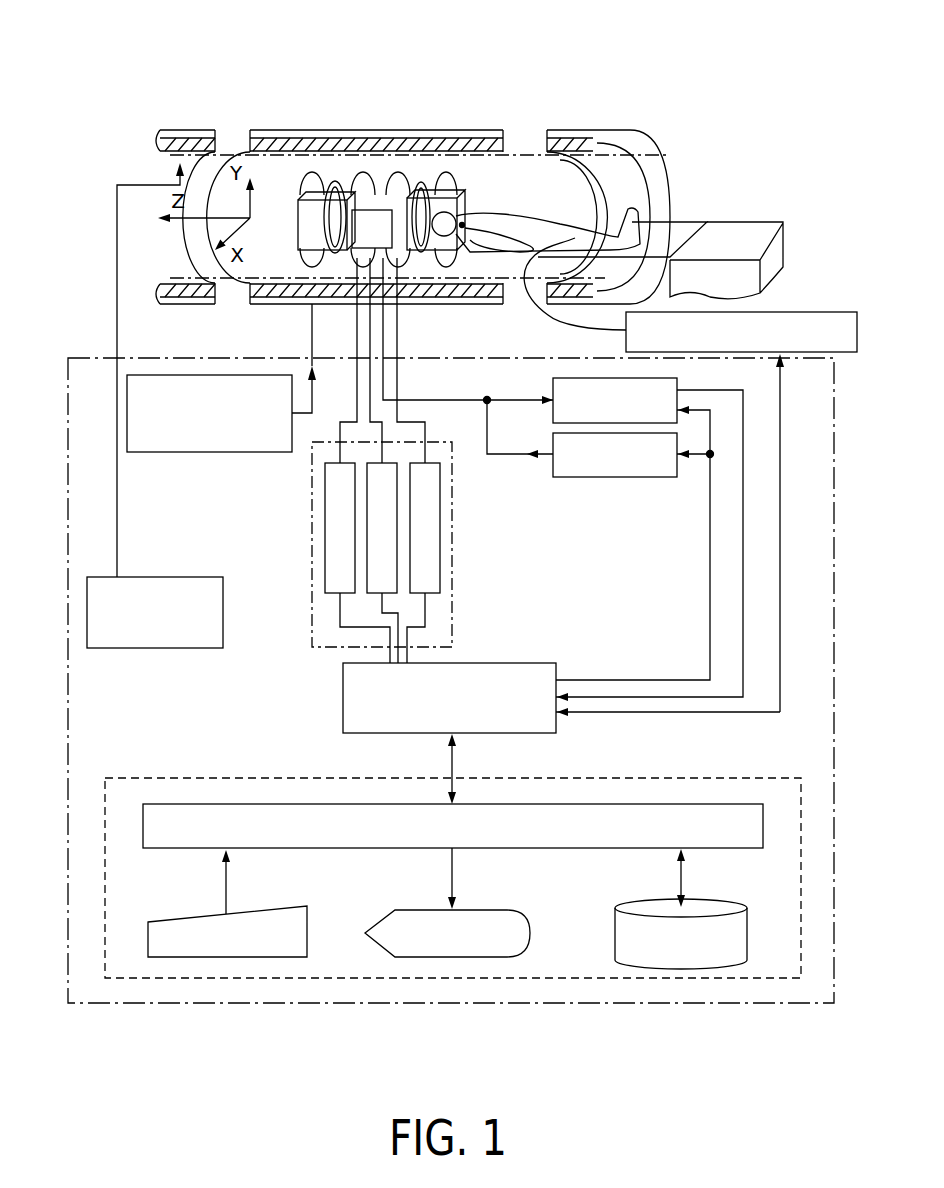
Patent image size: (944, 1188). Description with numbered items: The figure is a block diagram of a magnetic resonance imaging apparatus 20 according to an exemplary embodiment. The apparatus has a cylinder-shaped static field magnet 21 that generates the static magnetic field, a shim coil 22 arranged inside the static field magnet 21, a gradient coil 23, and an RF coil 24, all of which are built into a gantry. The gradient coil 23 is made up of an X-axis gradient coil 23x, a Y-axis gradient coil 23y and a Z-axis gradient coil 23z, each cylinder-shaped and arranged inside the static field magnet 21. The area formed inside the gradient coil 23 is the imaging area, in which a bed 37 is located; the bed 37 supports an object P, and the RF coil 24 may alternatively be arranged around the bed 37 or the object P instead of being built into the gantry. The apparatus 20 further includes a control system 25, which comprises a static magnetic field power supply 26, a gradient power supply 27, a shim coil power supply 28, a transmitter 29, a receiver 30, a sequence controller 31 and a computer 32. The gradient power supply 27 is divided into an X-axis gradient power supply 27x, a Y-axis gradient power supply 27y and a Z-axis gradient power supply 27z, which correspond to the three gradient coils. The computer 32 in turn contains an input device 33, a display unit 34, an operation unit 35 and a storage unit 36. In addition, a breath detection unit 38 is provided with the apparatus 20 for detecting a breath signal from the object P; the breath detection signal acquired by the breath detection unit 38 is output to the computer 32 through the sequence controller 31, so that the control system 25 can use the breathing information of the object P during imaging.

The magnetic resonance imaging apparatus 20 is at (592, 84).
The static field magnet 21 is at (486, 132).
The shim coil 22 is at (643, 131).
The gradient coil 23 is at (472, 268).
The X-axis gradient coil 23x is at (462, 190).
The Y-axis gradient coil 23y is at (446, 178).
The Z-axis gradient coil 23z is at (332, 181).
The RF coil 24 is at (366, 208).
The control system 25 is at (76, 350).
The static magnetic field power supply 26 is at (182, 375).
The gradient power supply 27 is at (380, 460).
The X-axis gradient power supply 27x is at (325, 517).
The Y-axis gradient power supply 27y is at (377, 593).
The Z-axis gradient power supply 27z is at (440, 520).
The shim coil power supply 28 is at (170, 577).
The transmitter 29 is at (610, 478).
The receiver 30 is at (597, 377).
The sequence controller 31 is at (515, 662).
The computer 32 is at (154, 768).
The input device 33 is at (268, 906).
The display unit 34 is at (497, 908).
The operation unit 35 is at (572, 848).
The storage unit 36 is at (718, 910).
The bed 37 is at (685, 223).
The breath detection unit 38 is at (812, 311).
The object P is at (632, 208).